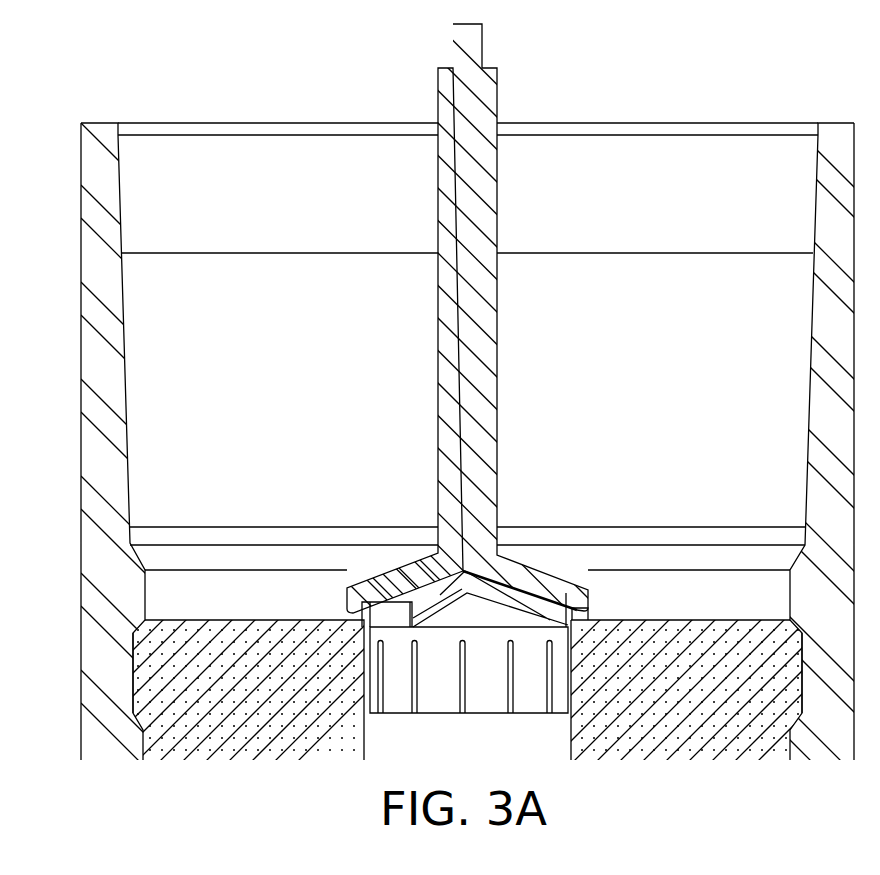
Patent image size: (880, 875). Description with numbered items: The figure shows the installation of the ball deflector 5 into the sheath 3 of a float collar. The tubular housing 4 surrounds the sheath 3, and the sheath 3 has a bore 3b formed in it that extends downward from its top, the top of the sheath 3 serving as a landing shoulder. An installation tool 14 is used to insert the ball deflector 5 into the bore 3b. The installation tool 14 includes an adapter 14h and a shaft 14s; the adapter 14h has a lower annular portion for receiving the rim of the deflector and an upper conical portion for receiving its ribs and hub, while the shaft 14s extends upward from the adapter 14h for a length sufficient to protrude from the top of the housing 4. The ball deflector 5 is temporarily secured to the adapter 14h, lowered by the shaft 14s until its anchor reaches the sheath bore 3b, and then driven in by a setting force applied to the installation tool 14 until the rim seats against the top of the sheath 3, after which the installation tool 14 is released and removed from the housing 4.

The sheath 3 is at (260, 620).
The sheath bore 3b is at (570, 733).
The housing 4 is at (81, 730).
The ball deflector 5 is at (555, 613).
The installation tool 14 is at (440, 437).
The shaft 14s is at (438, 313).
The adapter 14h is at (412, 568).